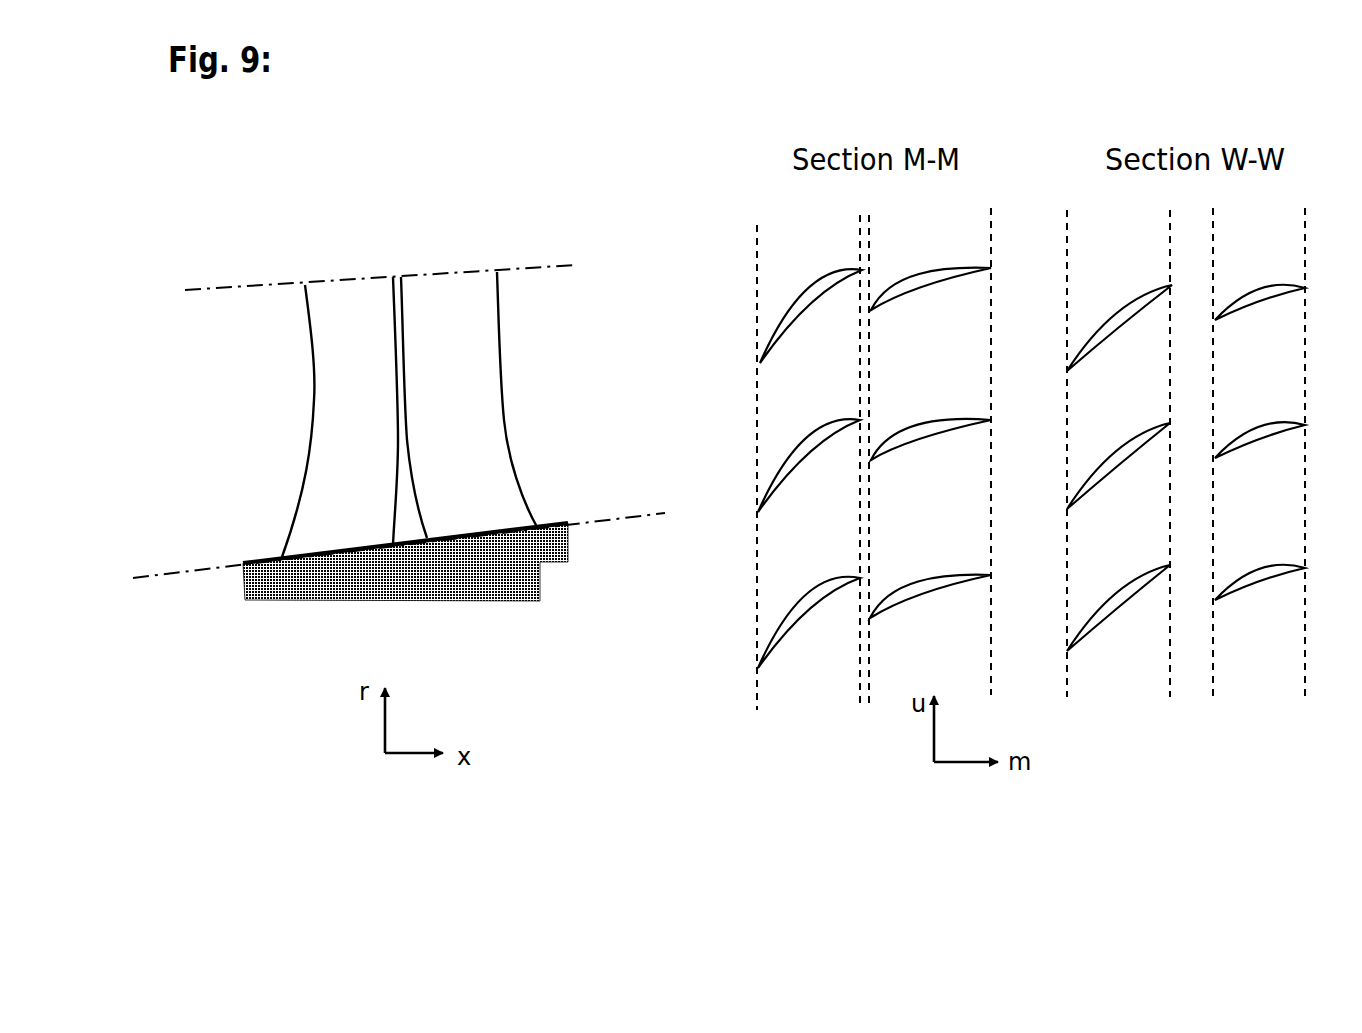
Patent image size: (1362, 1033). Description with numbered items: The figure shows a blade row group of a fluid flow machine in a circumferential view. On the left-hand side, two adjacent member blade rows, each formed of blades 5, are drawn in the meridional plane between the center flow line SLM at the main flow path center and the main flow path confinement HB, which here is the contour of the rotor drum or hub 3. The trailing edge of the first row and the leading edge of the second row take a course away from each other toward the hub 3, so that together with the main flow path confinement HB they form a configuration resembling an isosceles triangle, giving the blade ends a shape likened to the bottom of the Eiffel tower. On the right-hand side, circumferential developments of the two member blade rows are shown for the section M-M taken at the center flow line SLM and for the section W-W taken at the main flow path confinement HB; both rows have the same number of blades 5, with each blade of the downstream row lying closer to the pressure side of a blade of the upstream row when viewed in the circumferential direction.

The rotor drum (hub) 3 is at (503, 577).
The blade/blade row 5 is at (330, 397).
The center flow line SLM is at (419, 237).
The main flow path confinement HB is at (399, 520).
The section M- M is at (227, 283).
The section W- W is at (212, 566).